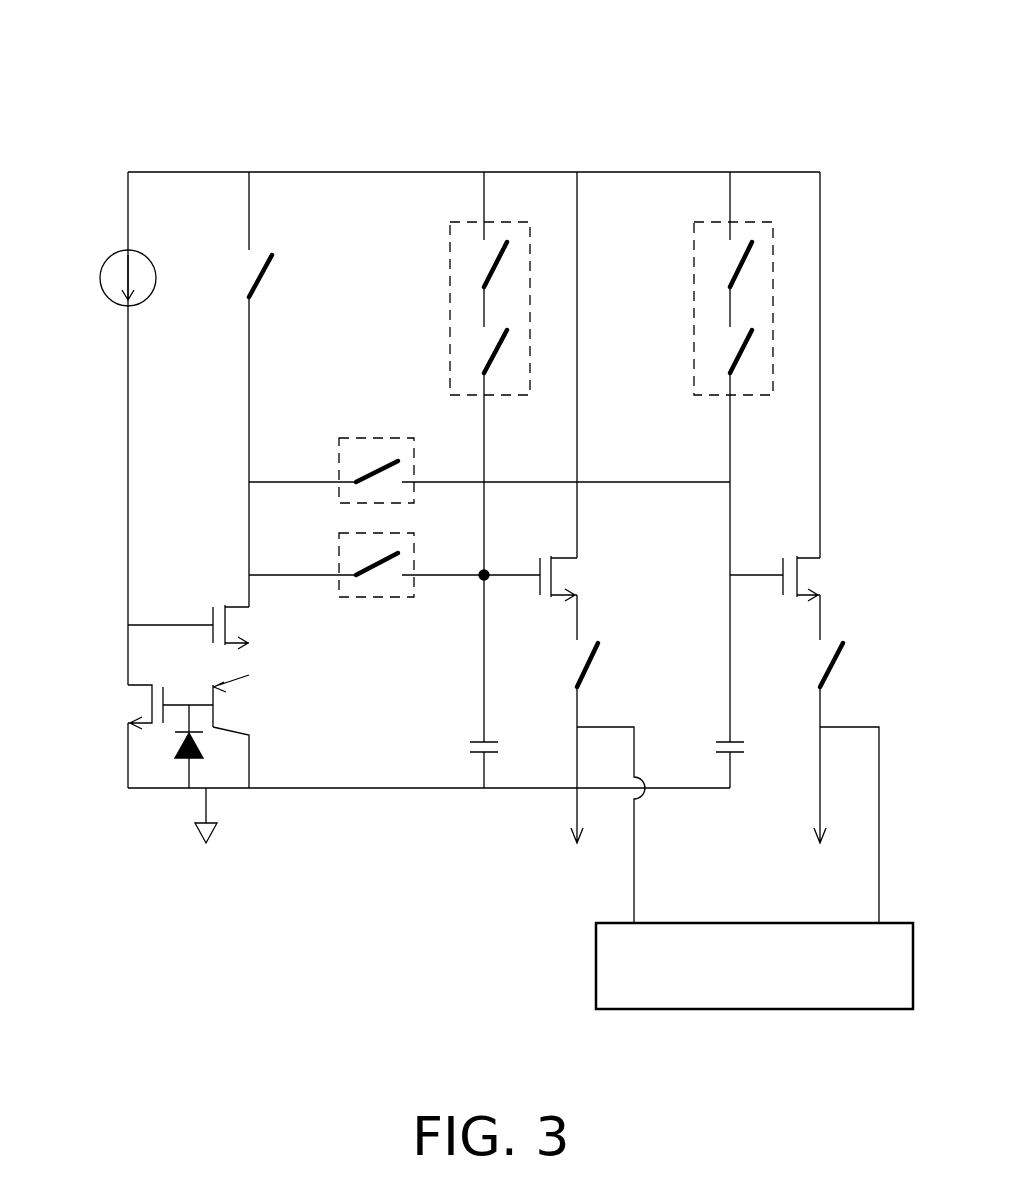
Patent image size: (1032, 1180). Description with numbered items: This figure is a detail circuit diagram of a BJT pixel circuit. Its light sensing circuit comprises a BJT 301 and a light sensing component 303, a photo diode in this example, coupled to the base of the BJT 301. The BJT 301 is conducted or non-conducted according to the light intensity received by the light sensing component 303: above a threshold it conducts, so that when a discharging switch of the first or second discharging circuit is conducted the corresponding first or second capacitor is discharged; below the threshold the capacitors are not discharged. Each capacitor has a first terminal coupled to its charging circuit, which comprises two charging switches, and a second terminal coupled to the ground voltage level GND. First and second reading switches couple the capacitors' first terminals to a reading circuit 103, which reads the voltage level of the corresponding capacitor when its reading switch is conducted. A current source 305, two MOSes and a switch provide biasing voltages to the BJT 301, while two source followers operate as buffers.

The current source 305 is at (100, 280).
The BJT 301 is at (230, 728).
The light sensing component 303 is at (177, 757).
The ground voltage level GND is at (535, 846).
The reading circuit 103 is at (767, 1010).